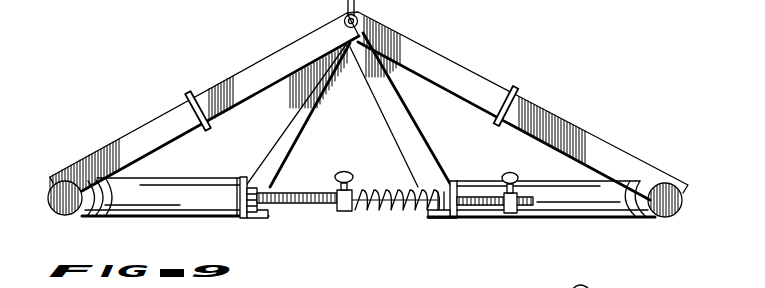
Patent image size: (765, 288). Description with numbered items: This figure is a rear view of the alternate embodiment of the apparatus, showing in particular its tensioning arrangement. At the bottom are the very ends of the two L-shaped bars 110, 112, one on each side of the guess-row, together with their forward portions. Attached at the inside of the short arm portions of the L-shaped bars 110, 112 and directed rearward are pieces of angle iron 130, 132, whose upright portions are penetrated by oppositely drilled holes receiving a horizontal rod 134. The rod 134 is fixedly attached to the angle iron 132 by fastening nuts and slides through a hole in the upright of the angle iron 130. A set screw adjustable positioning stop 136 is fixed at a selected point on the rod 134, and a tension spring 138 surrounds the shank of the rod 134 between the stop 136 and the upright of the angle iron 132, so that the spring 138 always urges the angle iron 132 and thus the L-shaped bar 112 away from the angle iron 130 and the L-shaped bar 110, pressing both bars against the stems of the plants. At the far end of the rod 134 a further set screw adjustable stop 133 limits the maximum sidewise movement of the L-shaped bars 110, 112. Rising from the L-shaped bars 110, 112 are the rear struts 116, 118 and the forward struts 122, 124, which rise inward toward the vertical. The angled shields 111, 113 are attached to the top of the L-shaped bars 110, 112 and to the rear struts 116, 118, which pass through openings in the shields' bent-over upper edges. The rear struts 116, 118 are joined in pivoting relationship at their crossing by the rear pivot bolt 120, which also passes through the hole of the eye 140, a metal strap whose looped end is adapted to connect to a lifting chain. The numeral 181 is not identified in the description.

The L-shaped bar 110 is at (532, 190).
The angled shield 111 is at (552, 112).
The L-shaped bar 112 is at (172, 178).
The angled shield 113 is at (123, 139).
The rear strut 116 is at (445, 73).
The rear strut 118 is at (233, 88).
The pivot bolt 120 is at (372, 28).
The forward strut 122 is at (393, 106).
The forward strut 124 is at (293, 127).
The angle iron 130 is at (436, 220).
The angle iron 132 is at (247, 218).
The set screw adjustable stop 133 is at (513, 213).
The horizontal rod 134 is at (283, 207).
The positioning stop 136 is at (338, 213).
The tension spring 138 is at (395, 223).
The eye 140 is at (343, 9).
The element of adjacent figure 181 is at (611, 283).